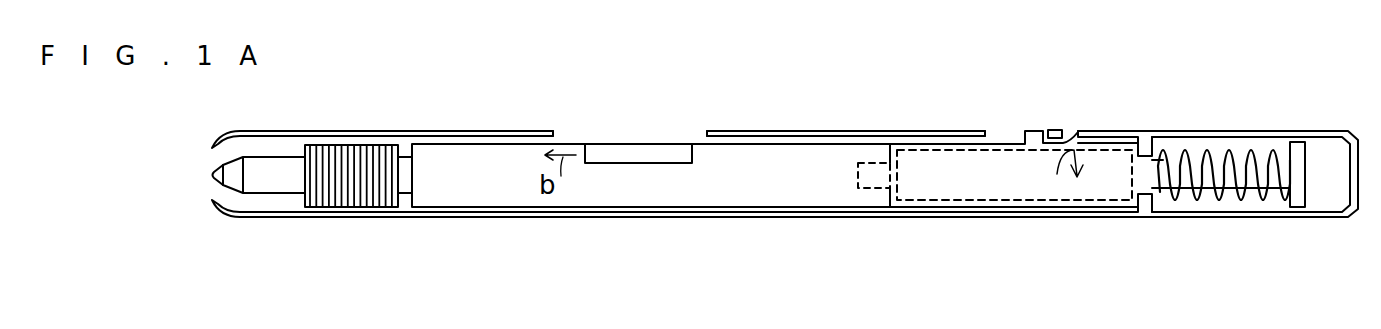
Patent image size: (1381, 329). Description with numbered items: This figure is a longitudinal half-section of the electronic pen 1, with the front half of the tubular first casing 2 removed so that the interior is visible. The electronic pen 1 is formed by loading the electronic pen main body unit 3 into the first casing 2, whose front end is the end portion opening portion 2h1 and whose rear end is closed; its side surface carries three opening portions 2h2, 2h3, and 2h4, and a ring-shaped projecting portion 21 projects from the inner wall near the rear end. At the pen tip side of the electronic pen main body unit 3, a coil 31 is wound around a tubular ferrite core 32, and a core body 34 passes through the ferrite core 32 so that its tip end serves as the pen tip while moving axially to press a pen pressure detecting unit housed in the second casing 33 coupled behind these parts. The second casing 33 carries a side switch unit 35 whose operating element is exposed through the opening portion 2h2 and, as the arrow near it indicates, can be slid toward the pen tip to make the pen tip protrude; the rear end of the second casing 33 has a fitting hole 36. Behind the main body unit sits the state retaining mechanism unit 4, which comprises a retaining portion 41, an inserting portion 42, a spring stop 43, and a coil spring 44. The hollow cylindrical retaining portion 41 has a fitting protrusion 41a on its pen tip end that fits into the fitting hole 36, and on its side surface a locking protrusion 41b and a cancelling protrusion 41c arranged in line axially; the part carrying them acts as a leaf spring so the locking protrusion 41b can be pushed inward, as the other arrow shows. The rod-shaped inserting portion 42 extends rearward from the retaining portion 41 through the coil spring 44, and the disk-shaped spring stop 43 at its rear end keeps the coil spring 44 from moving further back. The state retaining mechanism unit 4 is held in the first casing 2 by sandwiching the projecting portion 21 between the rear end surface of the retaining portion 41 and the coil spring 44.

The electronic pen 1 is at (1261, 116).
The first casing 2 is at (620, 143).
The end portion opening portion 2h1 is at (215, 160).
The opening portion 2h2 is at (688, 137).
The opening portion 2h3 is at (1005, 135).
The opening portion 2h4 is at (1065, 131).
The projecting portion 21 is at (1203, 131).
The electronic pen main body unit 3 is at (537, 182).
The coil 31 is at (345, 195).
The ferrite core 32 is at (270, 183).
The second casing 33 is at (651, 182).
The core body 34 is at (215, 182).
The side switch unit 35 is at (611, 150).
The fitting hole 36 is at (857, 180).
The state retaining mechanism unit 4 is at (1066, 200).
The retaining portion 41 is at (998, 174).
The fitting protrusion 41a is at (878, 182).
The locking protrusion 41b is at (1070, 135).
The cancelling protrusion 41c is at (1032, 130).
The inserting portion 42 is at (1158, 180).
The spring stop 43 is at (1308, 209).
The coil spring 44 is at (1242, 177).